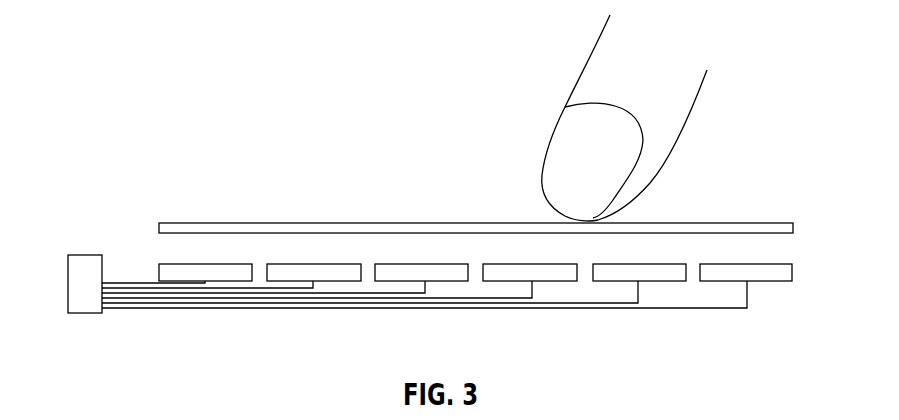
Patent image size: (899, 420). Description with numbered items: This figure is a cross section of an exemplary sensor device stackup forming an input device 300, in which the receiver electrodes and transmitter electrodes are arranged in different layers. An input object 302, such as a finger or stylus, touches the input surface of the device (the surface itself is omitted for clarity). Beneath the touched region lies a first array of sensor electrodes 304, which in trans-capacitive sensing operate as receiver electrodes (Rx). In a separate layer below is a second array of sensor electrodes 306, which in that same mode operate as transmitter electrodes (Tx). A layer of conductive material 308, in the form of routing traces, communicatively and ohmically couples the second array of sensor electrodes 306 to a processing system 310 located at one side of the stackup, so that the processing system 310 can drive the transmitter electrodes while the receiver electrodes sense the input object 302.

The input device 300 is at (146, 131).
The input object 302 is at (582, 68).
The first array of sensor electrodes 304 is at (248, 222).
The second array of sensor electrodes 306 is at (793, 275).
The layer of conductive material 308 is at (167, 310).
The processing system 310 is at (85, 254).